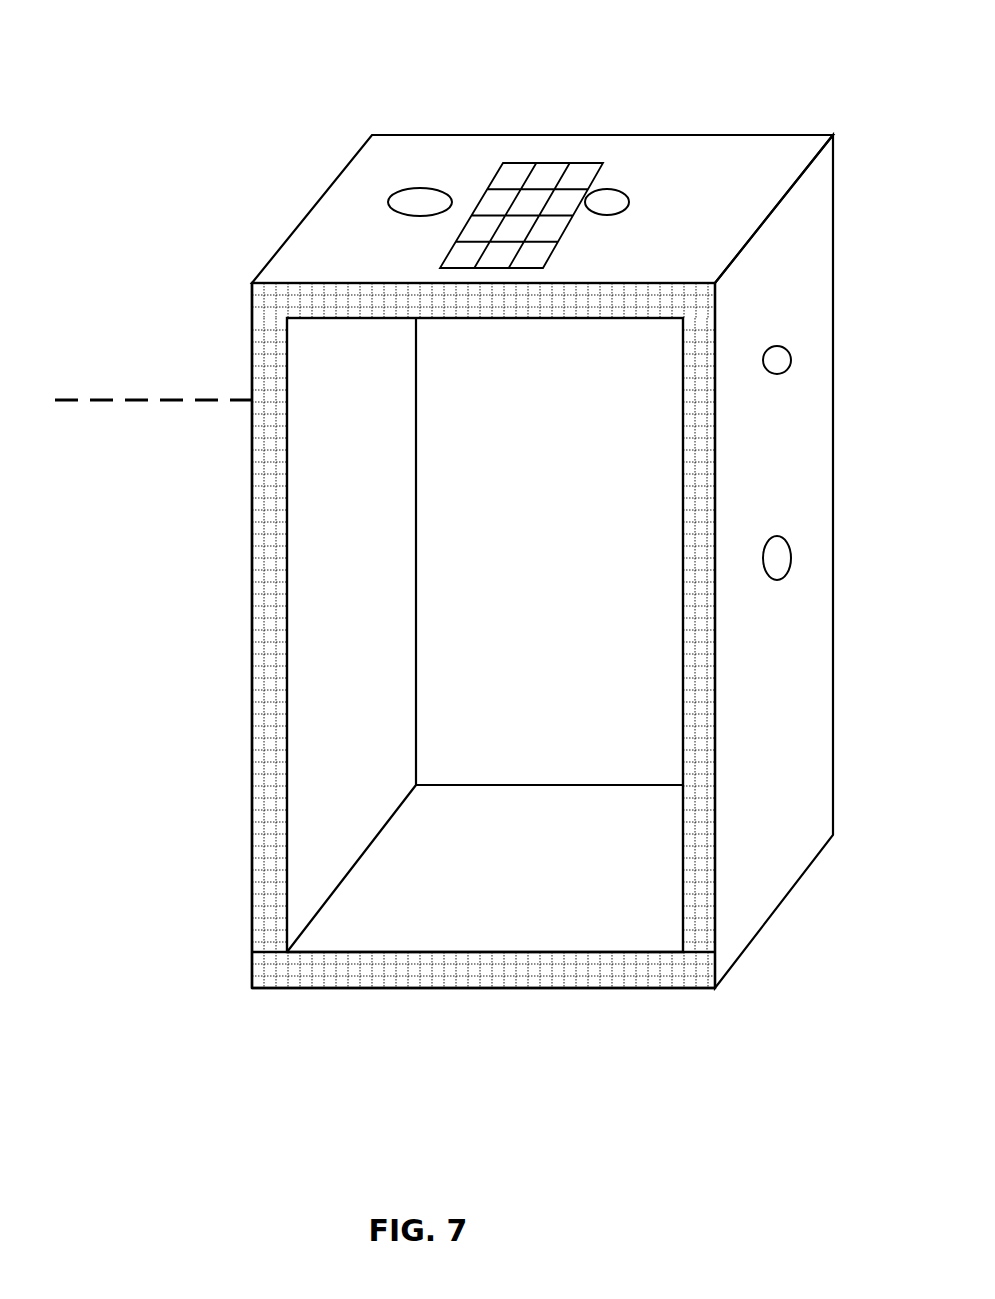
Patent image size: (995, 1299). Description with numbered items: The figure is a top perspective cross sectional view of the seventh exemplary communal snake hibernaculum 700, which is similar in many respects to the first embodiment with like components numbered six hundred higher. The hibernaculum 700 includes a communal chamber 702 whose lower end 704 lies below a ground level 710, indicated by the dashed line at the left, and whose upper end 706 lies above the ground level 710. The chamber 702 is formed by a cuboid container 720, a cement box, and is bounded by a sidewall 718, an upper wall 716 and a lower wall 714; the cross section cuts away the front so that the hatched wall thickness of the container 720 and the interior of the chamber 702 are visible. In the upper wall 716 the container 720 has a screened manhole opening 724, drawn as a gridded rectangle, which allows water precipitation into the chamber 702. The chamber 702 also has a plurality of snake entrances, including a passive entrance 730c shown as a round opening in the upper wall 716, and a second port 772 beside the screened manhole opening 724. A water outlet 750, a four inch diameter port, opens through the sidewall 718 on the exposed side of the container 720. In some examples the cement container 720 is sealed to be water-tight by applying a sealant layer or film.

The communal snake hibernaculum 700 is at (222, 163).
The communal chamber 702 is at (325, 560).
The front frame 704 is at (222, 910).
The upper end 706 is at (708, 172).
The ground level 710 is at (148, 400).
The lower wall 714 is at (563, 925).
The upper wall 716 is at (463, 168).
The sidewall 718 is at (252, 728).
The cuboid container 720 is at (265, 595).
The screened manhole opening 724 is at (542, 172).
The passive entrance 730c is at (413, 190).
The water outlet 750 is at (766, 577).
The top port 772 is at (636, 190).